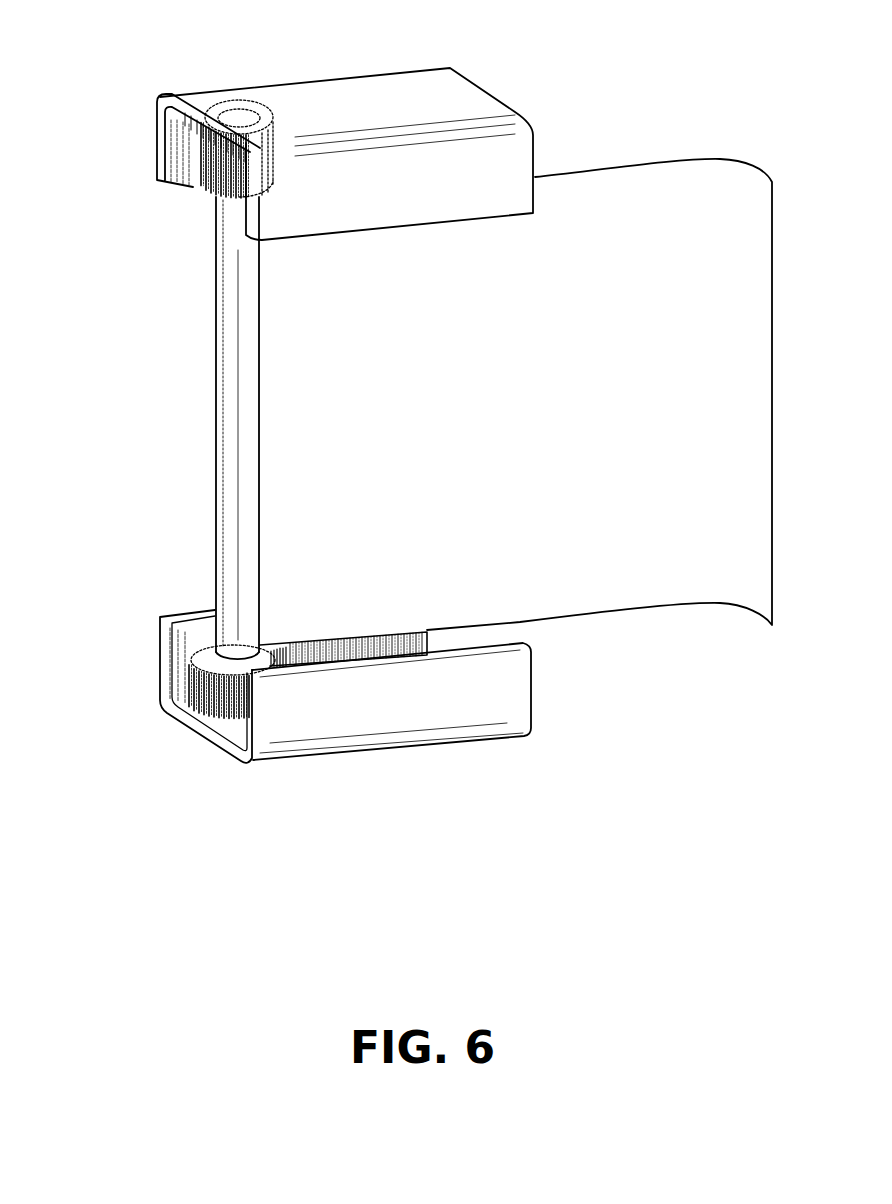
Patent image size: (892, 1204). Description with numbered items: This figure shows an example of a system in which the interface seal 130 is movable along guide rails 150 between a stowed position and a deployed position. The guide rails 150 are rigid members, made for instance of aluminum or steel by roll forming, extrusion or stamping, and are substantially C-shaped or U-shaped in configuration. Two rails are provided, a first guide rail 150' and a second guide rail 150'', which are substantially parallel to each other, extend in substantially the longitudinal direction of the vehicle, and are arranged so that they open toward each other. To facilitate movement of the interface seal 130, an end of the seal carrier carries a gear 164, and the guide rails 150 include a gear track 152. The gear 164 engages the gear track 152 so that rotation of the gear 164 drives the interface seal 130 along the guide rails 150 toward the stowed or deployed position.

The interface seal 130 is at (728, 160).
The guide rails 150 is at (315, 415).
The first guide rail 150' is at (345, 123).
The second guide rail 150'' is at (345, 719).
The gear track 152 is at (175, 173).
The gear 164 is at (200, 130).